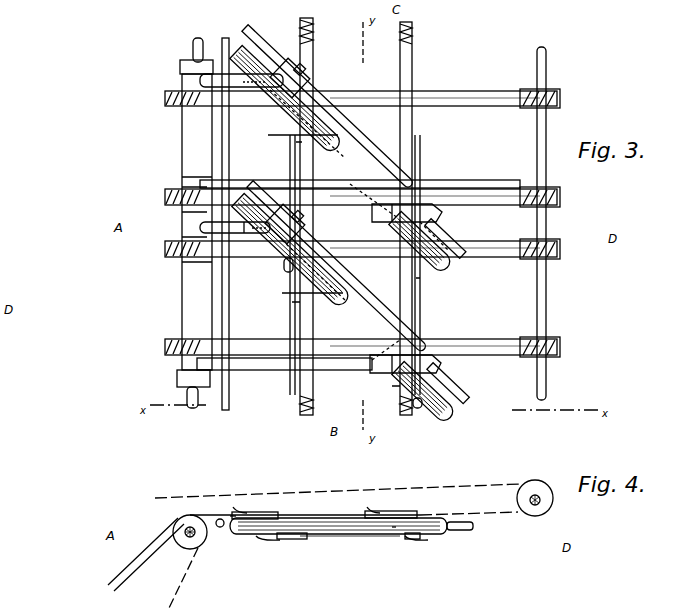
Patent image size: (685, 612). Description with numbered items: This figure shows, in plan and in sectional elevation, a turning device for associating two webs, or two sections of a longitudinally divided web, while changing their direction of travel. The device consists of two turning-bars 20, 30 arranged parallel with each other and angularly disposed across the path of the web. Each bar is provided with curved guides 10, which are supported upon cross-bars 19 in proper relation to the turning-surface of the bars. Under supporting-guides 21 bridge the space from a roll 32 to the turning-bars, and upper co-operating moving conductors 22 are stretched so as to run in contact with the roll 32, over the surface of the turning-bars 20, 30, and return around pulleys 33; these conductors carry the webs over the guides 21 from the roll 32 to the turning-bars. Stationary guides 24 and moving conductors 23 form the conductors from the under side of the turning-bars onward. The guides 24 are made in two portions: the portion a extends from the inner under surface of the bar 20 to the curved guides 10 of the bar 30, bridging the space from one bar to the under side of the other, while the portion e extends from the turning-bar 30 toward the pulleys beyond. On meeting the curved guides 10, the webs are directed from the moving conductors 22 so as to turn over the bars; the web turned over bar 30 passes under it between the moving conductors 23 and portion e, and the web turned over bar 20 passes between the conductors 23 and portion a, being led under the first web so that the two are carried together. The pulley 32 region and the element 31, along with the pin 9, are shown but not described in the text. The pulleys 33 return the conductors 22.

In FIG. 3, the pin 9 is at (378, 377).
In FIG. 4, the pin 9 is at (242, 507).
In FIG. 3, the curved guides 10 is at (353, 233).
In FIG. 4, the curved guides 10 is at (278, 513).
In FIG. 3, the cross-bars 19 is at (369, 153).
In FIG. 3, the turning-bar 20 is at (336, 150).
In FIG. 3, the under supporting-guides 21 is at (240, 76).
In FIG. 4, the under supporting-guides 21 is at (219, 515).
In FIG. 3, the upper co-operating moving conductors 22 is at (361, 223).
In FIG. 4, the upper co-operating moving conductors 22 is at (174, 513).
In FIG. 3, the moving conductors 23 is at (313, 47).
In FIG. 4, the moving conductors 23 is at (294, 539).
In FIG. 3, the stationary guides 24 is at (289, 152).
In FIG. 4, the stationary guides 24 is at (320, 537).
In FIG. 3, the turning-bar 30 is at (338, 306).
In FIG. 4, the turning-bar 30 is at (342, 536).
In FIG. 3, the rod 31 is at (233, 288).
In FIG. 4, the rod 31 is at (220, 528).
In FIG. 3, the roll 32 is at (195, 223).
In FIG. 4, the roll 32 is at (184, 540).
In FIG. 3, the pulleys 33 is at (553, 108).
In FIG. 4, the pulleys 33 is at (535, 498).
In FIG. 3, the portion of the guides a is at (358, 210).
In FIG. 3, the portion of the guides e is at (342, 344).
In FIG. 4, the portion of the guides e is at (397, 523).